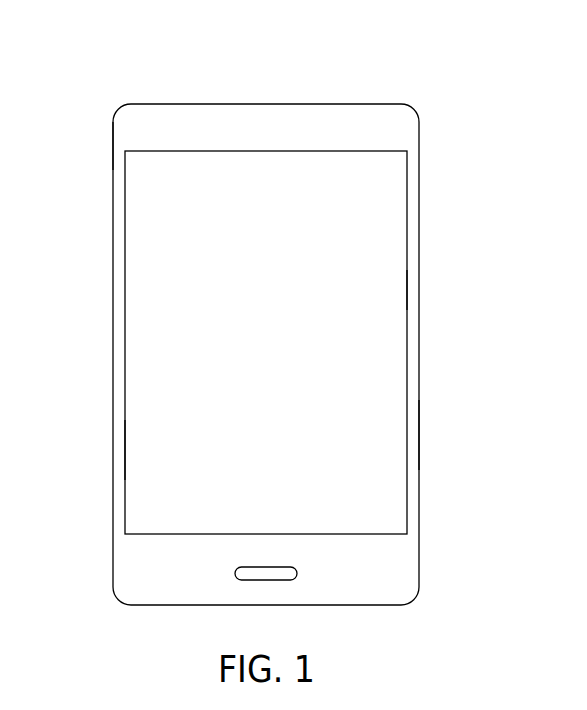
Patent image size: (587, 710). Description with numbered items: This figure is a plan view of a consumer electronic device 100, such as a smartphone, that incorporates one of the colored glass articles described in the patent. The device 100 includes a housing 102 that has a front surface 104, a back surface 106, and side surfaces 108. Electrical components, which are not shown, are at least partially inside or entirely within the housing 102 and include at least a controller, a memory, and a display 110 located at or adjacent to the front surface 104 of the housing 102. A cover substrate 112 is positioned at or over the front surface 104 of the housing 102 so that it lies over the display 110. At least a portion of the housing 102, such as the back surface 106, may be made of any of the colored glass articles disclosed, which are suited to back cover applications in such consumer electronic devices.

The consumer electronic device 100 is at (319, 312).
The housing 102 is at (113, 150).
The front surface 104 is at (400, 582).
The back surface 106 is at (148, 295).
The side surfaces 108 is at (420, 443).
The display 110 is at (446, 304).
The cover substrate 112 is at (142, 463).